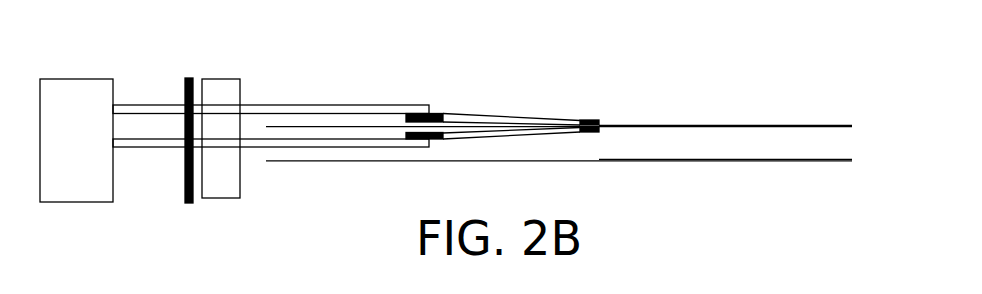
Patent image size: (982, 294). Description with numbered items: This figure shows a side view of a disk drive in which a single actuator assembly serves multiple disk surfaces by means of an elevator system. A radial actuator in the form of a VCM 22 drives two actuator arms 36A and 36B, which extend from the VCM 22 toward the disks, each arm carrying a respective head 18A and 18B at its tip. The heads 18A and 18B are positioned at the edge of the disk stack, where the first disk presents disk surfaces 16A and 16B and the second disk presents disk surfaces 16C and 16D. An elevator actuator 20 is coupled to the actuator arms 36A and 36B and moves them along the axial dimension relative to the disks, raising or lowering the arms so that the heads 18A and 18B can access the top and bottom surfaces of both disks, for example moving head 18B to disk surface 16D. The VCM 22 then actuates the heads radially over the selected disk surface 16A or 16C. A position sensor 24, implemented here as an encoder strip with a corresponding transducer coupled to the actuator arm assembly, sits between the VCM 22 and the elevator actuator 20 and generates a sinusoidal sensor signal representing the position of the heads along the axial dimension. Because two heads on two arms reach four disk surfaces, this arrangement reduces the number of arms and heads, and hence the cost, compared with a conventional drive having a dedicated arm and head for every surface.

The radial actuator (VCM) 22 is at (79, 78).
The position sensor 24 is at (188, 77).
The elevator actuator 20 is at (220, 78).
The actuator arm 36A is at (146, 105).
The actuator arm 36B is at (148, 150).
The head 18A is at (600, 121).
The head 18B is at (601, 134).
The first disk surface 16A is at (853, 123).
The disk surface 16B is at (853, 129).
The second disk surface 16C is at (853, 157).
The disk surface 16D is at (853, 163).